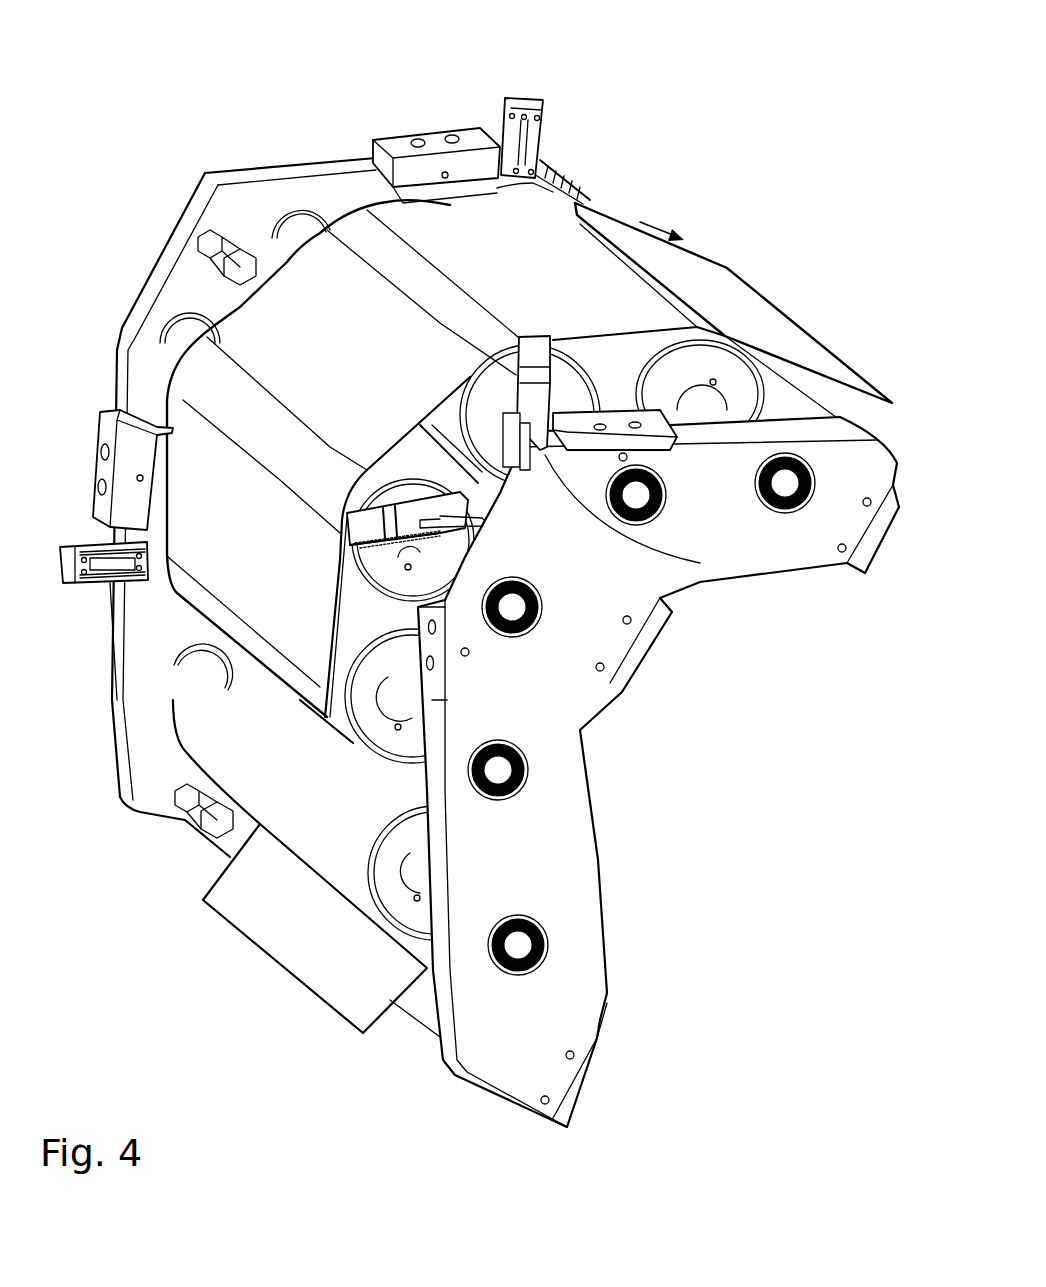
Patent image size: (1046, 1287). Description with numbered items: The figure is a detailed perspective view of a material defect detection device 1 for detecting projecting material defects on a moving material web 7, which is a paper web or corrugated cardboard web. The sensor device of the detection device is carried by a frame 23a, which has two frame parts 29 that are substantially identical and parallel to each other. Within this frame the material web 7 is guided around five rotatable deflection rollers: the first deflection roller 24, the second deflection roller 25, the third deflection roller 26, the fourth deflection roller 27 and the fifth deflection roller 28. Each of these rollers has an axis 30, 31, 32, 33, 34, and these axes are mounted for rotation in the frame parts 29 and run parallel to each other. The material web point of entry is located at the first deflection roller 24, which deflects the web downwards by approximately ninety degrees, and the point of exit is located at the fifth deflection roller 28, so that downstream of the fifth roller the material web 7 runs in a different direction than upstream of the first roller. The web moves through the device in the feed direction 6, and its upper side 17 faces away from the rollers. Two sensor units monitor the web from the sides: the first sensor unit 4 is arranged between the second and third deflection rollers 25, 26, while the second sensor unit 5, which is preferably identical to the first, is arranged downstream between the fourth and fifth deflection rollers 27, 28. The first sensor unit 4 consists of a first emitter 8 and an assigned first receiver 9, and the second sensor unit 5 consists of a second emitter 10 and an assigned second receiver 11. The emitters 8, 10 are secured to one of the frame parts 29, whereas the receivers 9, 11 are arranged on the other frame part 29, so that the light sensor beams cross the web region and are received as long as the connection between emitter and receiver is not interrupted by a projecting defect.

The material defect detection device 1 is at (174, 86).
The first sensor unit 4 is at (75, 595).
The second sensor unit 5 is at (500, 108).
The feed direction 6 is at (662, 230).
The material web 7 is at (232, 336).
The first emitter 8 is at (67, 553).
The first receiver 9 is at (412, 530).
The second emitter 10 is at (537, 100).
The second receiver 11 is at (545, 455).
The upper side 17 is at (623, 233).
The frame 23a is at (836, 580).
The first deflection roller 24 is at (413, 908).
The second deflection roller 25 is at (167, 517).
The third deflection roller 26 is at (173, 378).
The fourth deflection roller 27 is at (347, 200).
The fifth deflection roller 28 is at (497, 187).
The frame parts 29 is at (267, 170).
The axis 30 is at (550, 945).
The axis 31 is at (530, 772).
The axis 32 is at (540, 628).
The axis 33 is at (640, 505).
The axis 34 is at (785, 485).